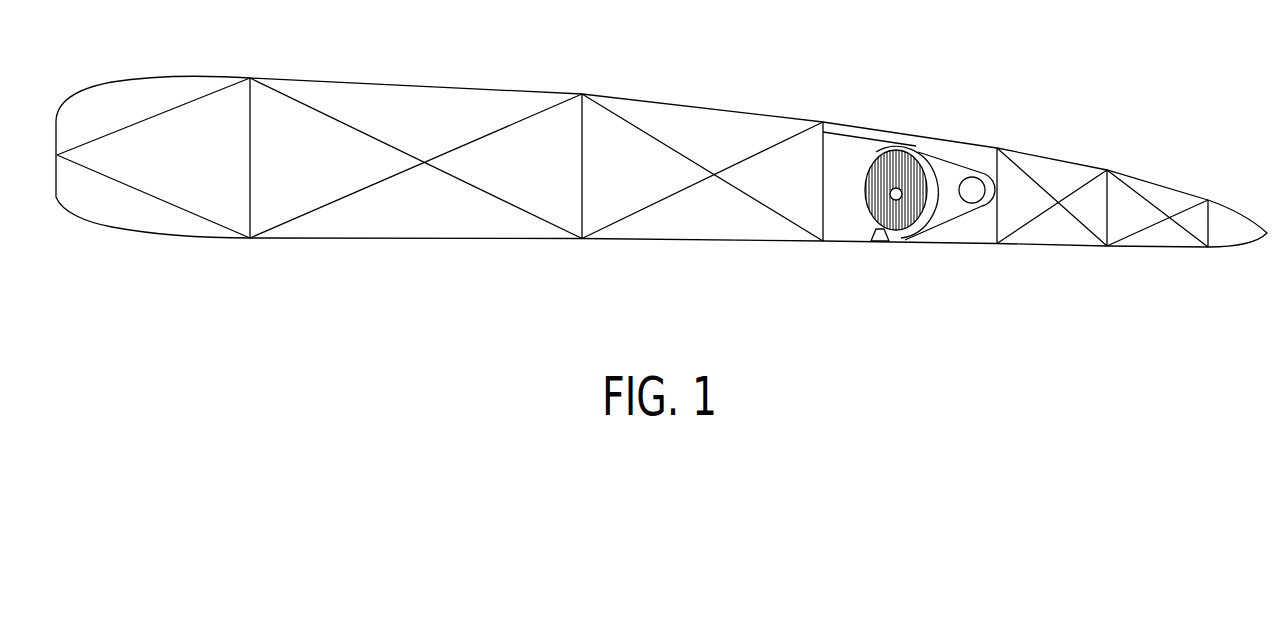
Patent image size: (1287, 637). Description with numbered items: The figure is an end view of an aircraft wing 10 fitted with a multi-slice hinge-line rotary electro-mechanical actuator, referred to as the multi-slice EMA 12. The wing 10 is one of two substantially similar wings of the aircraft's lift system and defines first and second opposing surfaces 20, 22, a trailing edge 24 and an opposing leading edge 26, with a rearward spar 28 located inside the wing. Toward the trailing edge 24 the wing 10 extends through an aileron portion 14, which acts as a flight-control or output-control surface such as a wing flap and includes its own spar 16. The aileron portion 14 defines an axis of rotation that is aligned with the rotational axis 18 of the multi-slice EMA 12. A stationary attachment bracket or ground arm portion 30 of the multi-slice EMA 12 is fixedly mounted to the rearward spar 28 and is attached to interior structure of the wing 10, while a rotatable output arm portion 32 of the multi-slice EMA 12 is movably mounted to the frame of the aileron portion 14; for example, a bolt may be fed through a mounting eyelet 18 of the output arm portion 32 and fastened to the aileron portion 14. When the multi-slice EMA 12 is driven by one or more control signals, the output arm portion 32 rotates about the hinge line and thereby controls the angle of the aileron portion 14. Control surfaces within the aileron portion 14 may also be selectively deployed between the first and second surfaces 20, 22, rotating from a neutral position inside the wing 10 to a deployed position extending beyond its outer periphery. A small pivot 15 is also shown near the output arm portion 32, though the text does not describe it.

The aircraft wing 10 is at (661, 160).
The multi-slice hinge-line rotary electro-mechanical actuator 12 is at (897, 250).
The aileron portion 14 is at (1102, 184).
The pivot 15 is at (970, 186).
The spar 16 is at (1008, 220).
The rotational axis 18 is at (897, 188).
The first surface 20 is at (710, 108).
The second surface 22 is at (420, 240).
The trailing edge 24 is at (1237, 208).
The leading edge 26 is at (95, 86).
The rearward spar 28 is at (830, 246).
The ground arm portion 30 is at (845, 142).
The output arm portion 32 is at (943, 217).